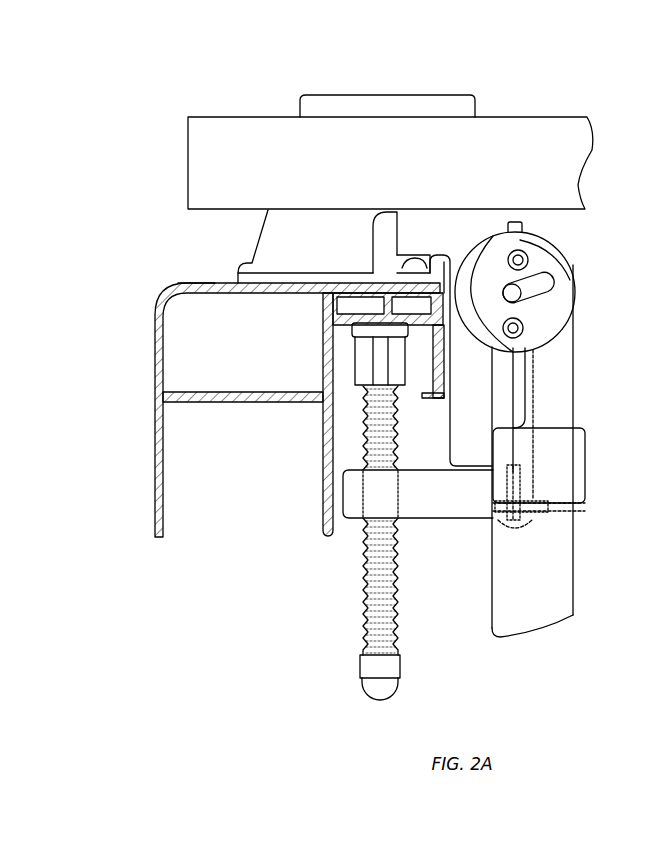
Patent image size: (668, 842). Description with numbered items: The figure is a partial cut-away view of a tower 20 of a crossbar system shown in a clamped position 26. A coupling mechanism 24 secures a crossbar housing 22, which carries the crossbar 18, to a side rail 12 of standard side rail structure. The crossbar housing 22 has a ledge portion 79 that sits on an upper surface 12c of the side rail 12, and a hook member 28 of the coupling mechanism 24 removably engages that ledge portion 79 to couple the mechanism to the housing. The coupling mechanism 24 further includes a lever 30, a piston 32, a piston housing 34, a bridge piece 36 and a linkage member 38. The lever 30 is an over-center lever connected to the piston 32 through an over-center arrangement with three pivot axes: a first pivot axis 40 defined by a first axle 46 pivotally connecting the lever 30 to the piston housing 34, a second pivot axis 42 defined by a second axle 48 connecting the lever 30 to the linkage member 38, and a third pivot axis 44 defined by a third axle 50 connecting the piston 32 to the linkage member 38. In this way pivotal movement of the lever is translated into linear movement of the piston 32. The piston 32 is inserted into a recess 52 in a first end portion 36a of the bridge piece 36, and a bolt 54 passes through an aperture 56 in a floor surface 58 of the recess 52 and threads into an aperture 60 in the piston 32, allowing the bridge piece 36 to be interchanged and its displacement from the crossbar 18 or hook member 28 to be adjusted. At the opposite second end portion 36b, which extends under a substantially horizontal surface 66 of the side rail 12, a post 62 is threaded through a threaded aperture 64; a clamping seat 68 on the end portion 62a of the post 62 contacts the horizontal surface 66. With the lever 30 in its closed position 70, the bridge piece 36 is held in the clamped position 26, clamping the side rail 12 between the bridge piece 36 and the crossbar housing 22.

The side rail 12 is at (160, 380).
The upper surface 12c is at (212, 282).
The crossbar 18 is at (188, 162).
The tower 20 is at (530, 82).
The crossbar housing 22 is at (250, 253).
The coupling mechanism 24 is at (438, 583).
The clamped position 26 is at (488, 668).
The hook member 28 is at (373, 232).
The lever 30 is at (567, 590).
The piston 32 is at (540, 385).
The piston housing 34 is at (447, 446).
The bridge piece 36 is at (427, 504).
The first end portion 36a is at (488, 532).
The second end portion 36b is at (335, 498).
The linkage member 38 is at (560, 345).
The first pivot axis 40 is at (548, 284).
The second pivot axis 42 is at (528, 259).
The third pivot axis 44 is at (526, 334).
The first axle 46 is at (524, 292).
The second axle 48 is at (520, 245).
The third axle 50 is at (520, 326).
The recess 52 is at (540, 477).
The bolt 54 is at (515, 530).
The aperture 56 is at (560, 504).
The floor surface 58 is at (495, 508).
The aperture 60 is at (515, 464).
The post 62 is at (363, 600).
The end portion 62a is at (363, 412).
The threaded aperture 64 is at (362, 503).
The horizontal surface 66 is at (350, 332).
The clamping seat 68 is at (355, 346).
The closed position 70 is at (542, 645).
The ledge portion 79 is at (412, 262).